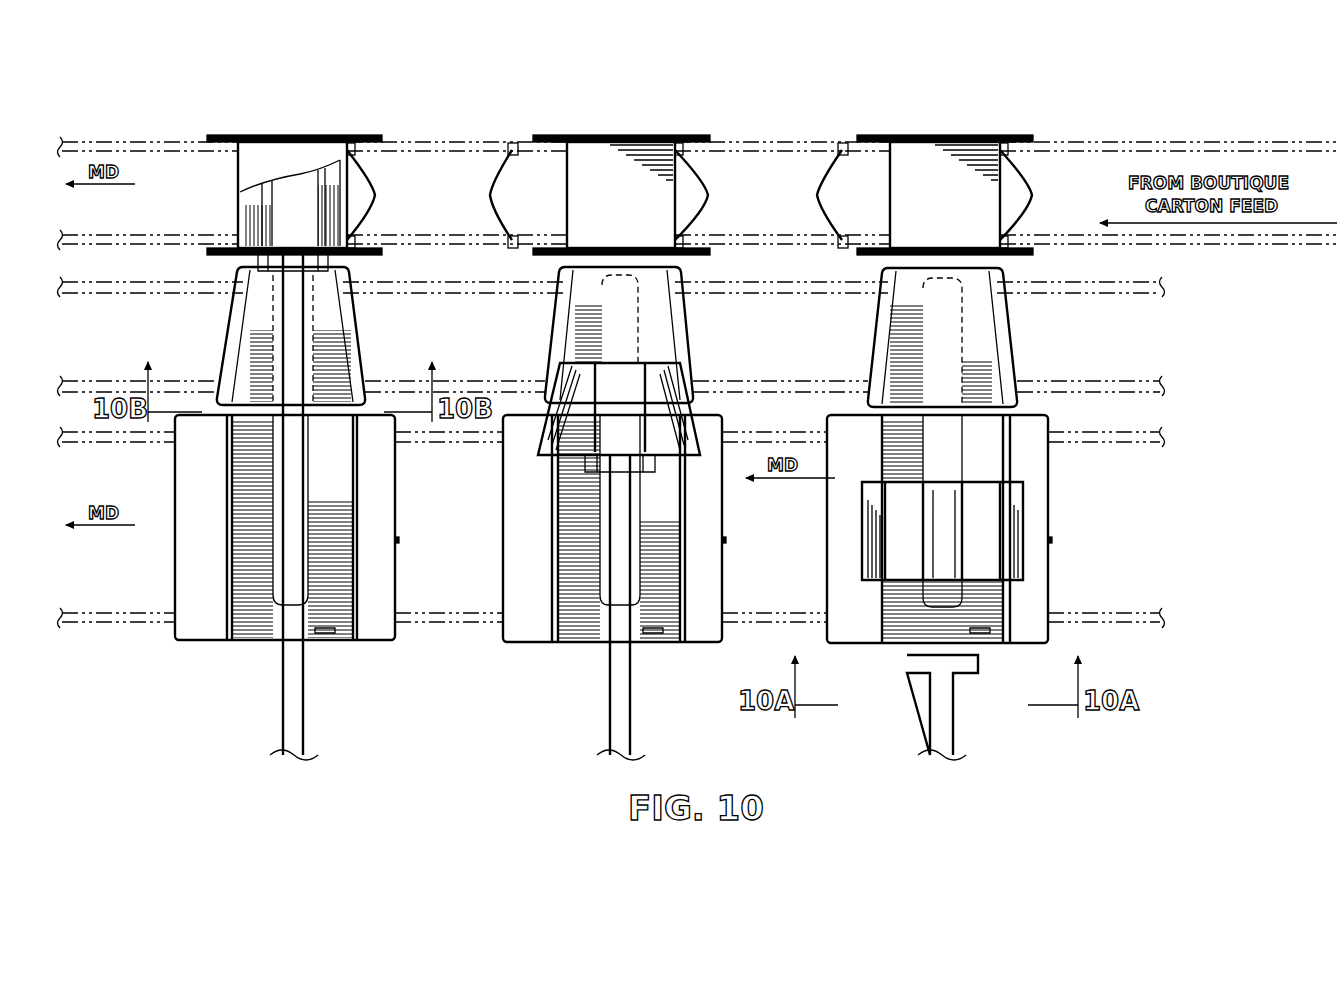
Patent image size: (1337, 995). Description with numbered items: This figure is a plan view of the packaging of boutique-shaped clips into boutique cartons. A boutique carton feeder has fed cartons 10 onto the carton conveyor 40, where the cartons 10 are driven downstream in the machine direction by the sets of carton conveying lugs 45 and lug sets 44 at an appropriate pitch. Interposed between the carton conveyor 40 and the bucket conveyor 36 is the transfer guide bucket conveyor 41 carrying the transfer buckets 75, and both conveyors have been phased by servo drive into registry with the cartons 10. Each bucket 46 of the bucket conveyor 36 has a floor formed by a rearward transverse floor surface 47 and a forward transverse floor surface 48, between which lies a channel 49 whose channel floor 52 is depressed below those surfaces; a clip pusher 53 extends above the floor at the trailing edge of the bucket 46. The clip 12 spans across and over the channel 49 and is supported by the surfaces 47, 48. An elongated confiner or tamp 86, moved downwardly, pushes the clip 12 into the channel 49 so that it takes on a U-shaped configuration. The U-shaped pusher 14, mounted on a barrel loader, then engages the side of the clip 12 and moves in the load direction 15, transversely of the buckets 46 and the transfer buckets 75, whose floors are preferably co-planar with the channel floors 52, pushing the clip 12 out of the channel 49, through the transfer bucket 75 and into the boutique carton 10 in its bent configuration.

The boutique carton 10 is at (628, 357).
The boutique shaped clip 12 is at (1062, 522).
The U-shaped pusher 14 is at (332, 258).
The load direction 15 is at (327, 706).
The bucket conveyor 36 is at (150, 443).
The carton conveyor 40 is at (137, 140).
The transfer guide bucket conveyor 41 is at (170, 294).
The lug set 44 is at (705, 195).
The carton conveying lugs 45 is at (651, 195).
The bucket 46 is at (195, 648).
The rearward transverse floor surface 47 is at (380, 604).
The forward transverse floor surface 48 is at (210, 470).
The channel 49 is at (345, 435).
The channel floor 52 is at (322, 632).
The clip pusher 53 is at (398, 541).
The transfer bucket 75 is at (368, 350).
The confiner 86 is at (312, 496).